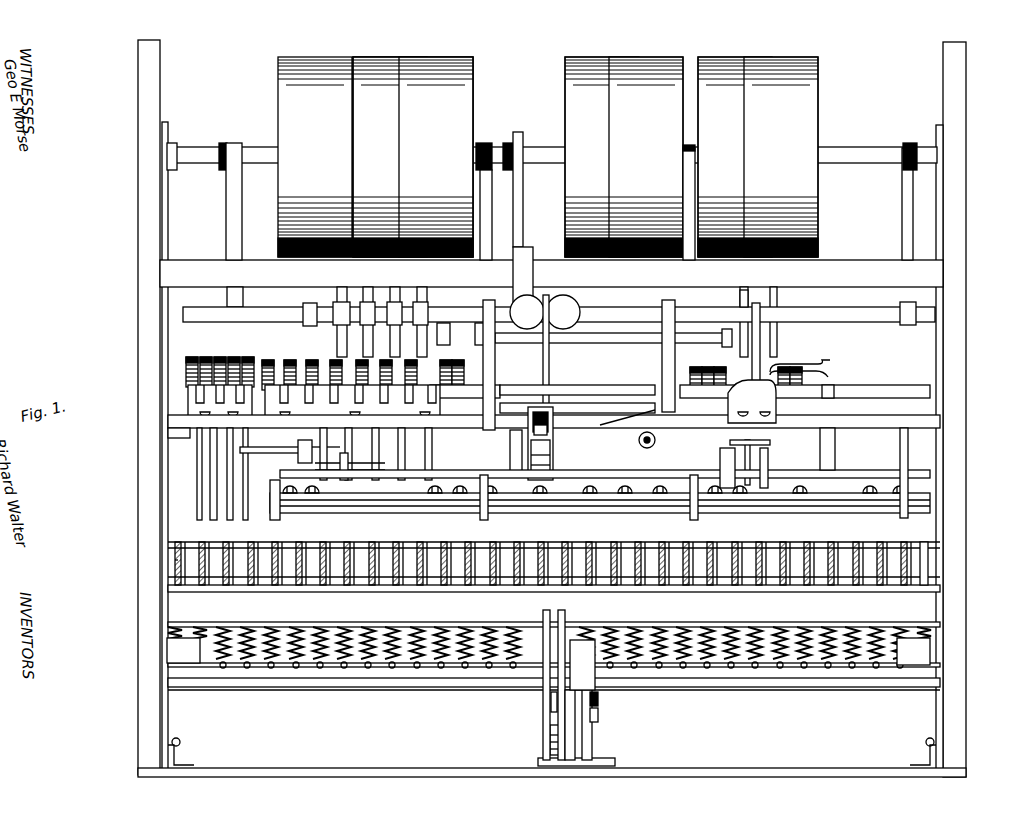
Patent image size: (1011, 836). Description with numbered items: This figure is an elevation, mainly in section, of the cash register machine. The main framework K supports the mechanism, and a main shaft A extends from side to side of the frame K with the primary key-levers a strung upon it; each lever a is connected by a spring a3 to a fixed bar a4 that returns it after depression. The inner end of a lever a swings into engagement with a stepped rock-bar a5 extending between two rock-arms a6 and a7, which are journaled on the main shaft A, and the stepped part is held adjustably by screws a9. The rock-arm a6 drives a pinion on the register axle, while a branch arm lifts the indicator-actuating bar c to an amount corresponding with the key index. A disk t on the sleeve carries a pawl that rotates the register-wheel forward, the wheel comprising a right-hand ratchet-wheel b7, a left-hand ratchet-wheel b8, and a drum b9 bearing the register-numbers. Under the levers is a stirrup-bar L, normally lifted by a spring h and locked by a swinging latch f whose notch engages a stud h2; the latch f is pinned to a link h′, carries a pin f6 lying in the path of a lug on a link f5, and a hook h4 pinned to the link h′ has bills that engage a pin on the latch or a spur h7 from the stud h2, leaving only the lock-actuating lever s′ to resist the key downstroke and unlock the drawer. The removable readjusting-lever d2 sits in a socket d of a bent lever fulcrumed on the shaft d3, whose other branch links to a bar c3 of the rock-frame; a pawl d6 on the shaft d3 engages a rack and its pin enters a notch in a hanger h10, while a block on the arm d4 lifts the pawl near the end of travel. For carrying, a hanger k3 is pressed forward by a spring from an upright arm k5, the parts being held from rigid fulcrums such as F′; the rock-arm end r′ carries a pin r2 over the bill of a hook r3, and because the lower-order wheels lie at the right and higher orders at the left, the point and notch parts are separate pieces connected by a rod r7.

The main framework K is at (138, 485).
The indicator-actuating bar c is at (904, 226).
The rod r7 is at (612, 342).
The readjusting-lever d2 is at (542, 357).
The shaft or pin d3 is at (592, 427).
The disk t is at (683, 356).
The socket d is at (556, 410).
The pawl d6 is at (548, 410).
The arm of the readjusting-lever d4 is at (548, 462).
The hanger h10 is at (510, 470).
The hanger k3 is at (762, 343).
The drum b9 is at (752, 375).
The upright arm k5 is at (760, 300).
The left-hand ratchet-wheel b8 is at (804, 354).
The right-hand ratchet-wheel b7 is at (808, 368).
The rigid fulcrum F′ is at (855, 322).
The bar c3 is at (276, 456).
The end of the rock-arm r′ is at (320, 478).
The hook r3 is at (345, 476).
The pin r2 is at (786, 450).
The screws a9 is at (744, 469).
The rock-arm a6 is at (906, 456).
The stepped rock-bar a5 is at (822, 525).
The rock-arm a7 is at (747, 510).
The main shaft A is at (178, 563).
The key-levers a is at (178, 575).
The spring a3 is at (414, 618).
The fixed bar a4 is at (387, 680).
The stirrup-bar L is at (554, 647).
The spring h is at (548, 753).
The link h′ is at (566, 628).
The hook h4 is at (575, 660).
The spur h7 is at (570, 712).
The stud h2 is at (590, 730).
The swinging latch f is at (582, 682).
The pin f6 is at (600, 696).
The link f5 is at (600, 714).
The lock-actuating lever s′ is at (548, 708).